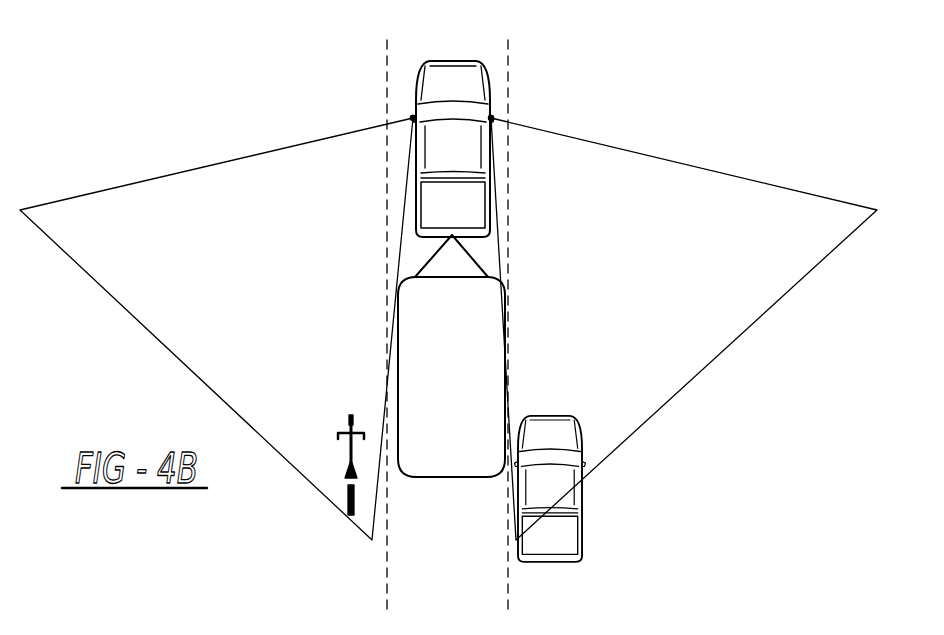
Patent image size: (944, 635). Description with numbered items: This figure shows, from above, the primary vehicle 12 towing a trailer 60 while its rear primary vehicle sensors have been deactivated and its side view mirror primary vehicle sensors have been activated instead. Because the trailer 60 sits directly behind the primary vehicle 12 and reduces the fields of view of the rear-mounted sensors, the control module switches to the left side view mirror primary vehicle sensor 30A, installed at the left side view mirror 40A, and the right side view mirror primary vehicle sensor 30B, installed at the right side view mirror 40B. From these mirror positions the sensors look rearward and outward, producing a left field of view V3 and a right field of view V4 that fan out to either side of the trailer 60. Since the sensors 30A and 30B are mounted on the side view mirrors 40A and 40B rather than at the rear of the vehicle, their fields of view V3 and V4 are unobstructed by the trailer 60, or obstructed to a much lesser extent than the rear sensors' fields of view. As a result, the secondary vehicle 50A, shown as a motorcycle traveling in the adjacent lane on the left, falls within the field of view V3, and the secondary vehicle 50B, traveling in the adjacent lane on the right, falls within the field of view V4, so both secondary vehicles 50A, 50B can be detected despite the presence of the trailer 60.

The primary vehicle 12 is at (467, 83).
The left side view mirror primary vehicle sensor 30A is at (413, 118).
The right side view mirror primary vehicle sensor 30B is at (491, 118).
The left side view mirror 40A is at (413, 118).
The right side view mirror 40B is at (491, 118).
The secondary vehicle 50A is at (343, 472).
The secondary vehicle 50B is at (580, 508).
The trailer 60 is at (462, 462).
The field of view V3 is at (100, 287).
The field of view V4 is at (775, 302).